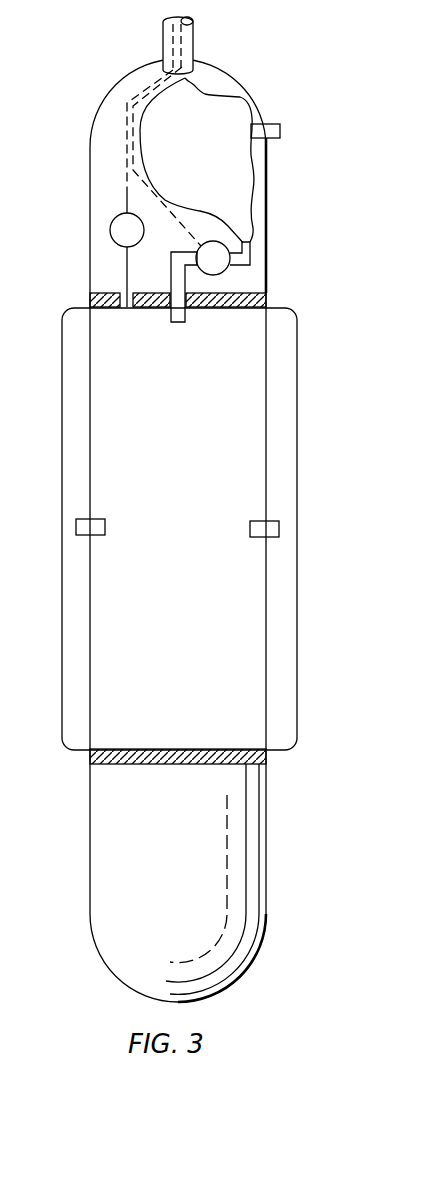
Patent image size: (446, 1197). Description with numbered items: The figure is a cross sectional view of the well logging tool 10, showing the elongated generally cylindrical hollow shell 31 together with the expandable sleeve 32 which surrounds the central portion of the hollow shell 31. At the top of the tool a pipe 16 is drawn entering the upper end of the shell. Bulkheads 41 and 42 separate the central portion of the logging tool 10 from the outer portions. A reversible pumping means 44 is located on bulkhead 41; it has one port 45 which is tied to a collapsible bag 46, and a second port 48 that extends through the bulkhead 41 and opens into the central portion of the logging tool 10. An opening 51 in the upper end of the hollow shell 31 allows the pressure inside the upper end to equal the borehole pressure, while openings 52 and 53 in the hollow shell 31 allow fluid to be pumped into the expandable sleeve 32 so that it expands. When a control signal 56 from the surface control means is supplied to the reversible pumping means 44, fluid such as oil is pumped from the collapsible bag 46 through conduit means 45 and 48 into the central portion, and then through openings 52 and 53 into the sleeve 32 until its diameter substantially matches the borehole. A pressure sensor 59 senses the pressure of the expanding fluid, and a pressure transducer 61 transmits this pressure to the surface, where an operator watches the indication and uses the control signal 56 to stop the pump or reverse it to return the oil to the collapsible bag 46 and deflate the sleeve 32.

The logging tool 10 is at (199, 509).
The inlet pipe 16 is at (194, 36).
The hollow shell 31 is at (268, 218).
The expandable sleeve 32 is at (298, 617).
The bulkhead 41 is at (214, 308).
The bulkhead 42 is at (176, 749).
The reversible pumping means 44 is at (227, 274).
The port 45 is at (268, 257).
The collapsible bag 46 is at (268, 172).
The second port 48 is at (178, 323).
The opening 51 is at (281, 131).
The opening 52 is at (250, 525).
The opening 53 is at (106, 527).
The control signal 56 is at (140, 192).
The pressure sensor 59 is at (127, 308).
The pressure transducer 61 is at (110, 230).